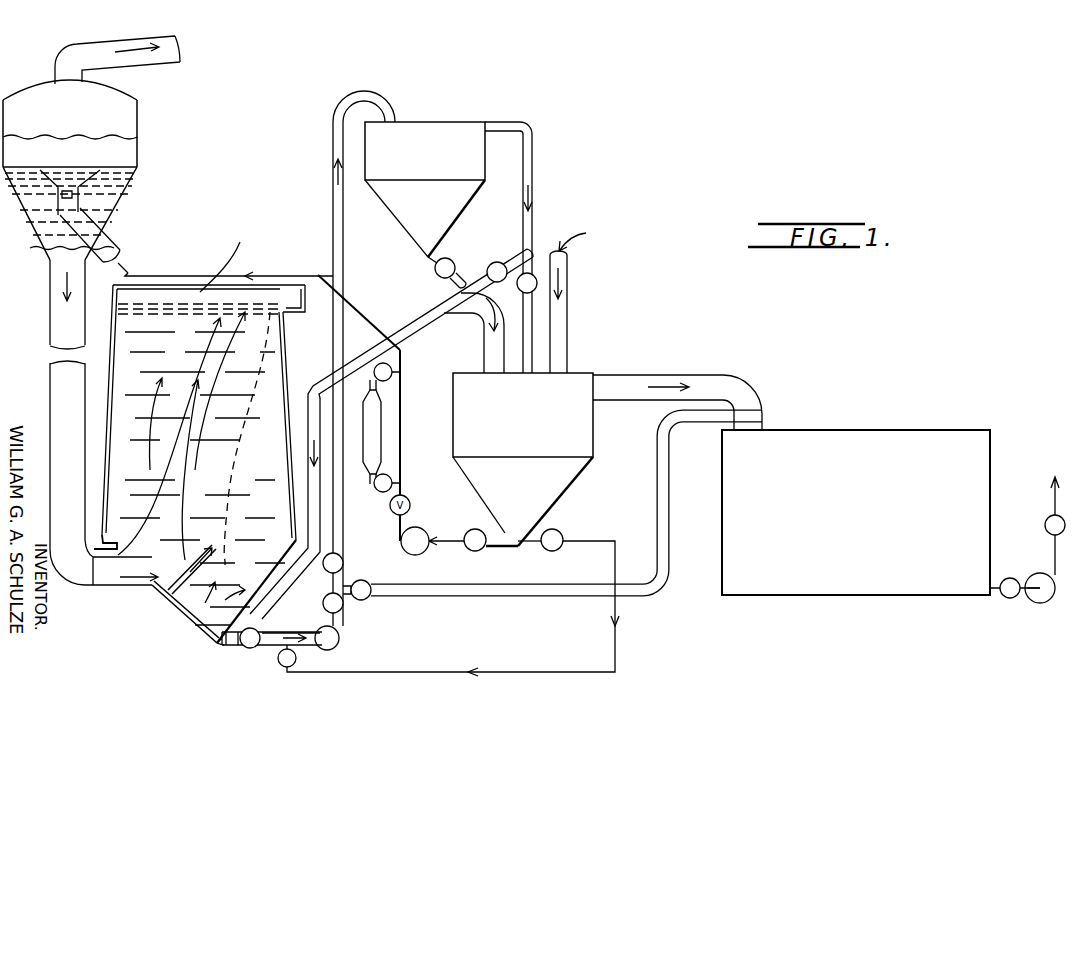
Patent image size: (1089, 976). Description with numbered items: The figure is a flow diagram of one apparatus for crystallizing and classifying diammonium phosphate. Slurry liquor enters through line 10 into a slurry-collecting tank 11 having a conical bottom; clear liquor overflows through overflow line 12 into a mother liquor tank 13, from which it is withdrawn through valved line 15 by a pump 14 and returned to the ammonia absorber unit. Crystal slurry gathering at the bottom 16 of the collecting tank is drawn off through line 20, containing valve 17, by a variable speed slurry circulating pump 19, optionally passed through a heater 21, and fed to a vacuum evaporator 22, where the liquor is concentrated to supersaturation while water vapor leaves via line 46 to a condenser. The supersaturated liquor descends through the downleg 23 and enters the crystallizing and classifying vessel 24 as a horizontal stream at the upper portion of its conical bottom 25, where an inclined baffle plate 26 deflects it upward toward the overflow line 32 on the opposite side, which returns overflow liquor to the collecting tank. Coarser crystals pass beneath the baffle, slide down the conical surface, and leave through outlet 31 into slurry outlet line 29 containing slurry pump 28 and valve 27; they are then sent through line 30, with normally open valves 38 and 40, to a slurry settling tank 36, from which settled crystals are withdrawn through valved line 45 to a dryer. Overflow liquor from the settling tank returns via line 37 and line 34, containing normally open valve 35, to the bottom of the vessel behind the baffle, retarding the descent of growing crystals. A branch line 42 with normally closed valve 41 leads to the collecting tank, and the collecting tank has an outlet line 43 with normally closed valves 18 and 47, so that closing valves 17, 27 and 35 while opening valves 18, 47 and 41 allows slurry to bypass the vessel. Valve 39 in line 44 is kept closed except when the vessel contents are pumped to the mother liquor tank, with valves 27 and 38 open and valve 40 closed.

The line 10 is at (568, 305).
The slurry-collecting tank 11 is at (594, 446).
The overflow line 12 is at (650, 374).
The mother liquor tank 13 is at (897, 430).
The pump 14 is at (1038, 602).
The valved line 15 is at (1052, 540).
The bottom of tank 16 is at (497, 522).
The valve 17 is at (478, 552).
The valve 18 is at (558, 552).
The variable speed slurry circulating pump 19 is at (417, 555).
The line 20 is at (142, 277).
The heater 21 is at (368, 442).
The vacuum evaporator 22 is at (140, 154).
The downleg 23 is at (48, 322).
The crystallizing and classifying vessel 24 is at (283, 360).
The conical bottom 25 is at (172, 594).
The baffle plate 26 is at (190, 558).
The valve 27 is at (257, 649).
The slurry pump 28 is at (340, 652).
The slurry outlet line 29 is at (283, 631).
The line 30 is at (333, 150).
The outlet 31 is at (219, 648).
The overflow line 32 is at (362, 292).
The line 34 is at (418, 335).
The valve 35 is at (497, 261).
The slurry settling tank 36 is at (470, 210).
The line 37 is at (534, 165).
The valve 38 is at (344, 604).
The valve 39 is at (363, 580).
The valve 40 is at (343, 560).
The valve 41 is at (519, 290).
The line 42 is at (518, 324).
The outlet line 43 is at (617, 643).
The line 44 is at (672, 560).
The valved line 45 is at (450, 259).
The line 46 is at (55, 50).
The valve 47 is at (296, 652).